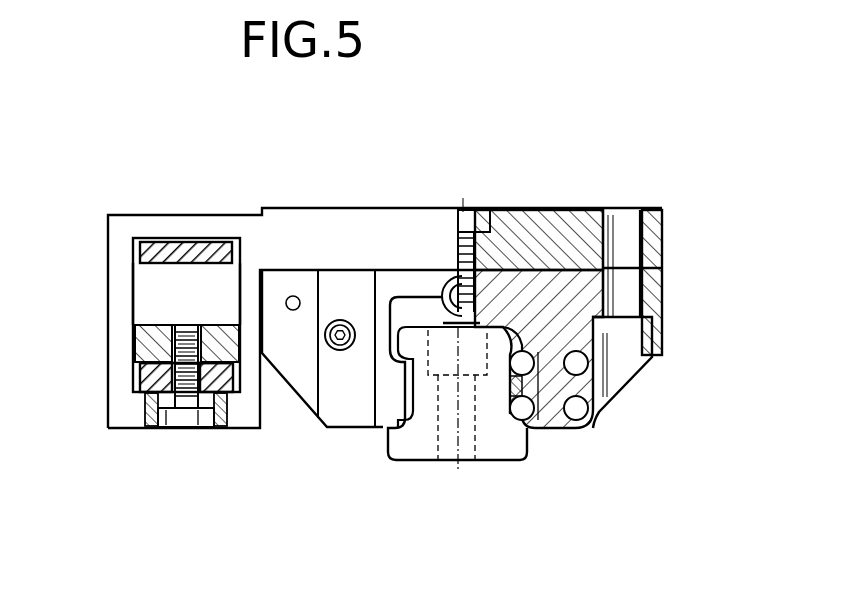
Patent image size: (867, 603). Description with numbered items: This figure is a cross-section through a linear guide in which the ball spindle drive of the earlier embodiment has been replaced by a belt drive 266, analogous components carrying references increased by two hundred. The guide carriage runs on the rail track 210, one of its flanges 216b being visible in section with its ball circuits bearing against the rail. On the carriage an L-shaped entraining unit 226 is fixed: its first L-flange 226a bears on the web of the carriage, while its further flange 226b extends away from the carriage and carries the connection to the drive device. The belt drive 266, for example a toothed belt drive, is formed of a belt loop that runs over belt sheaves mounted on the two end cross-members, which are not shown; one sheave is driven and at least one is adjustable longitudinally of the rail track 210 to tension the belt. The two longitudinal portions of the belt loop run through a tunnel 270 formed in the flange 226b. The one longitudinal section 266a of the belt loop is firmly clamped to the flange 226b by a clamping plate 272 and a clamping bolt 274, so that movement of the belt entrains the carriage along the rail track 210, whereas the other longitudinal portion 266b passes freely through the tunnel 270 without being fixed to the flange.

The rail track 210 is at (495, 442).
The flange of the guide carriage 216b is at (292, 398).
The entraining unit 226 is at (652, 237).
The first L-flange of the entraining unit 226a is at (550, 222).
The further flange of the entraining unit 226b is at (110, 298).
The belt drive 266 is at (164, 241).
The longitudinal section of the belt loop 266a is at (139, 393).
The other longitudinal portion of the belt loop 266b is at (213, 241).
The tunnel 270 is at (145, 275).
The clamping plate 272 is at (146, 352).
The clamping bolt 274 is at (194, 422).